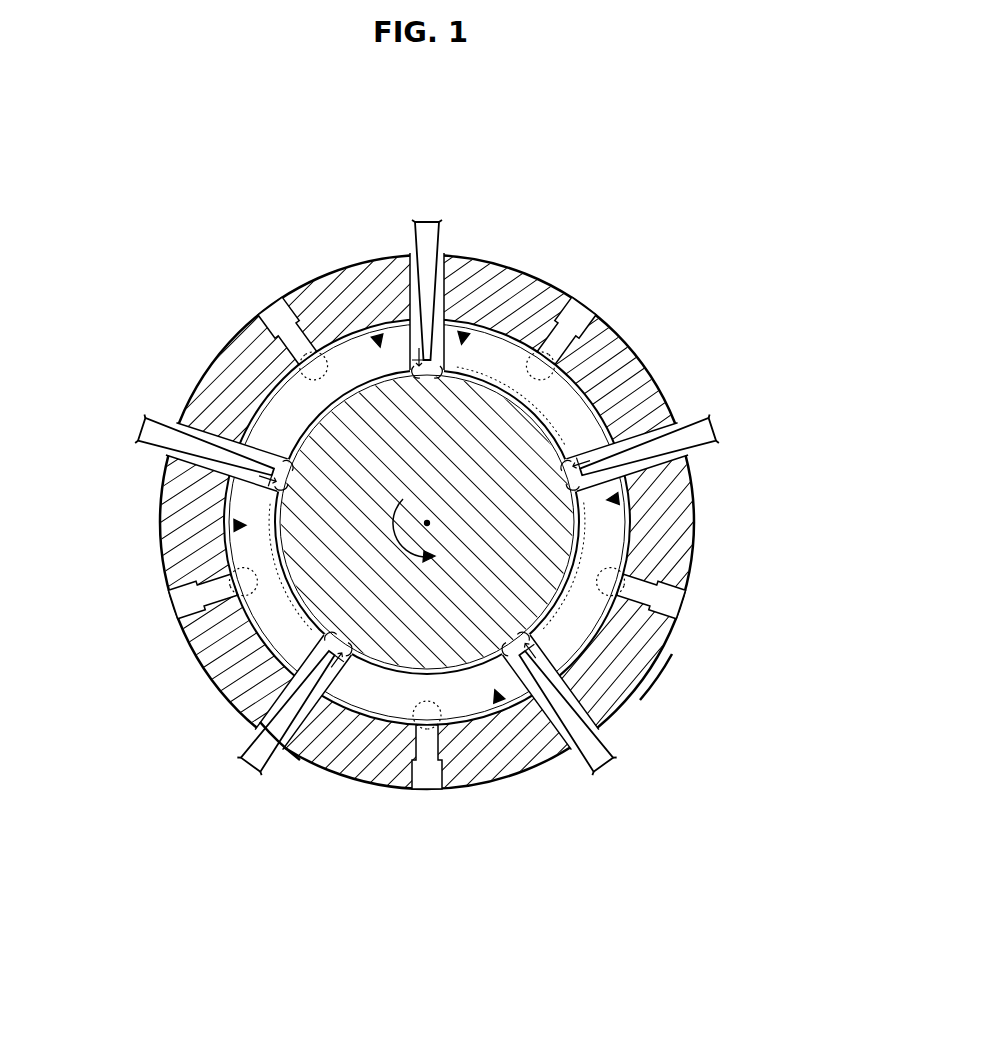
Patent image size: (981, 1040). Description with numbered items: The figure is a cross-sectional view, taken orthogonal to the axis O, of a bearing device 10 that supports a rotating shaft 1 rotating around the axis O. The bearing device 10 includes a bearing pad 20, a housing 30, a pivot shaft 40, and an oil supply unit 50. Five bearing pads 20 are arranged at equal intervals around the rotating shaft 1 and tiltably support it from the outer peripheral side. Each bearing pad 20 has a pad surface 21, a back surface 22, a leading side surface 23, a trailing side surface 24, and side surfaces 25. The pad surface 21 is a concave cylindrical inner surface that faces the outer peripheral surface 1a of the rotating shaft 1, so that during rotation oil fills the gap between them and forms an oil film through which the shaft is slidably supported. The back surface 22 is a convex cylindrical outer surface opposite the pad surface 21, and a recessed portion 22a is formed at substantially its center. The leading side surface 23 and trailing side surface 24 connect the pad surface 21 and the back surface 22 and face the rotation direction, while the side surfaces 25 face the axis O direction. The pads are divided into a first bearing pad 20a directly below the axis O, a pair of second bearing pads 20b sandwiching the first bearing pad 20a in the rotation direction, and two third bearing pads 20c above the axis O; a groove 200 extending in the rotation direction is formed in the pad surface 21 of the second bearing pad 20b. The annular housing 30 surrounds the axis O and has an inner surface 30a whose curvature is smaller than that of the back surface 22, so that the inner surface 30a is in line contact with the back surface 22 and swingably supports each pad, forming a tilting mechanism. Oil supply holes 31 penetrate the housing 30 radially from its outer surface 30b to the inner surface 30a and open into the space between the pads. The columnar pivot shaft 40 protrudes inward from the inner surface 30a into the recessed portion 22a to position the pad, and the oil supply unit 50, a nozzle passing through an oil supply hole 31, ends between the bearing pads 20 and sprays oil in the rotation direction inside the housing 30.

The rotating shaft 1 is at (270, 412).
The outer peripheral surface 1a is at (620, 400).
The bearing device 10 is at (582, 180).
The bearing pad 20 is at (425, 522).
The first bearing pad 20a is at (502, 698).
The second bearing pad 20b is at (236, 522).
The third bearing pad 20c is at (380, 338).
The pad surface 21 is at (352, 392).
The back surface 22 is at (347, 393).
The recessed portion 22a is at (300, 368).
The leading side surface 23 is at (418, 380).
The trailing side surface 24 is at (436, 380).
The side surfaces 25 is at (270, 430).
The housing 30 is at (645, 355).
The inner surface 30a is at (343, 765).
The outer surface 30b is at (653, 672).
The oil supply hole 31 is at (433, 358).
The pivot shaft 40 is at (296, 333).
The oil supply unit 50 is at (418, 238).
The groove 200 is at (428, 531).
The axis O is at (430, 520).